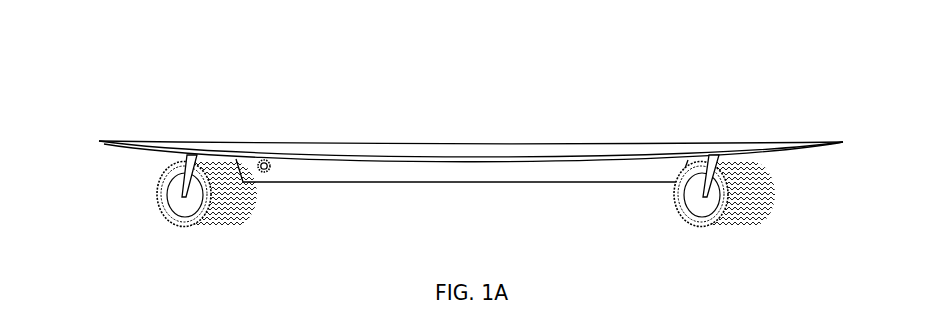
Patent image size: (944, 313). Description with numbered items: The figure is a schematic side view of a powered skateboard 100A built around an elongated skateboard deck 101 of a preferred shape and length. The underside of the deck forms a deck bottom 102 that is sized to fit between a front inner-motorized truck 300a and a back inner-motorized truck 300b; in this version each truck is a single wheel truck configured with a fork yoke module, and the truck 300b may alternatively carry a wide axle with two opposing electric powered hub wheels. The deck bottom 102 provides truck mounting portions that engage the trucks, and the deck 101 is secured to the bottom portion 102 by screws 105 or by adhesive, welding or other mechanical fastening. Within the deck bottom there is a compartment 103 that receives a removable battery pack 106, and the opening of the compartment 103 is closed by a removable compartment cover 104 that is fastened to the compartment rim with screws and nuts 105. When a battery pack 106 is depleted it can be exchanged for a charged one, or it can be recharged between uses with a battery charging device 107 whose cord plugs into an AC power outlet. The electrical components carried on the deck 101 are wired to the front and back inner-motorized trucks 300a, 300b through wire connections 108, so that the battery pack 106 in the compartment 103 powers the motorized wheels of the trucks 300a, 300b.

The powered skateboard 100A is at (156, 80).
The skateboard deck 101 is at (487, 148).
The deck bottom 102 is at (462, 194).
The compartment 103 is at (462, 194).
The removable compartment cover 104 is at (462, 194).
The screws 105 is at (178, 154).
The battery pack 106 is at (462, 194).
The battery charging device 107 is at (427, 175).
The wire connections 108 is at (264, 172).
The fork yoke module truck 300a is at (184, 198).
The inner-motorized truck 300b is at (705, 198).